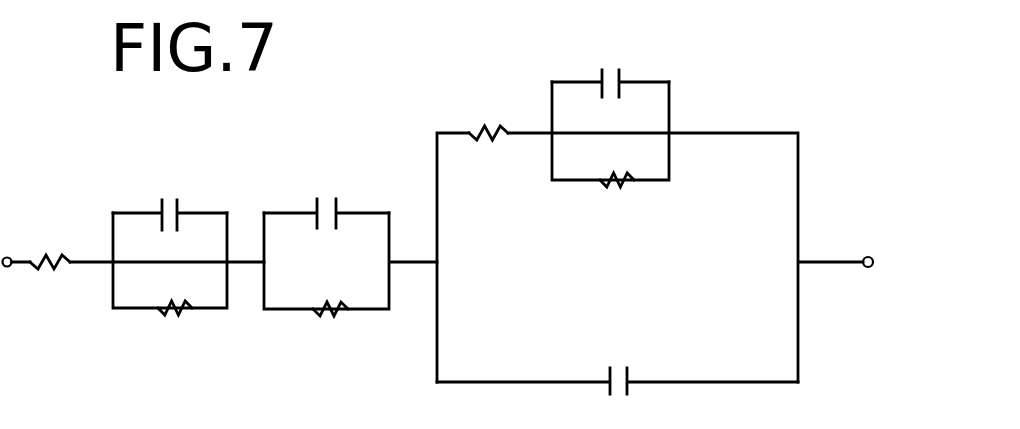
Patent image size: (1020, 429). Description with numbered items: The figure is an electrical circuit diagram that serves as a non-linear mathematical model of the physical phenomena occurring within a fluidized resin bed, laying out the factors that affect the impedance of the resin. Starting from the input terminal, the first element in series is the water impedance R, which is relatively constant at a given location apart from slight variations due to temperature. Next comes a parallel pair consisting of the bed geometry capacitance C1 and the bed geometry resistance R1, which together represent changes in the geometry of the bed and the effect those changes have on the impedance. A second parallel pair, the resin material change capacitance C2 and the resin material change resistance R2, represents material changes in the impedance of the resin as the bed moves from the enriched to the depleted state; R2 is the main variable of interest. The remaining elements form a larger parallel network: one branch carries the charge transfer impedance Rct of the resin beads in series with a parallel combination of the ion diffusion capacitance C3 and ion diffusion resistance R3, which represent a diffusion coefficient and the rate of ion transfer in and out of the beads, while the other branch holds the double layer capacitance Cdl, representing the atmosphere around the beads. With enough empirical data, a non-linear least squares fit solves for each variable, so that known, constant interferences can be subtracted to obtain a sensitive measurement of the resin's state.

The water impedance R is at (50, 243).
The bed geometry capacitance C1 is at (170, 195).
The bed geometry resistance R1 is at (171, 290).
The resin material change capacitance C2 is at (326, 194).
The resin material change resistance R2 is at (327, 290).
The charge transfer impedance Rct is at (488, 113).
The ion diffusion capacitance C3 is at (610, 66).
The ion diffusion resistance R3 is at (614, 160).
The double layer capacitance Cdl is at (617, 364).